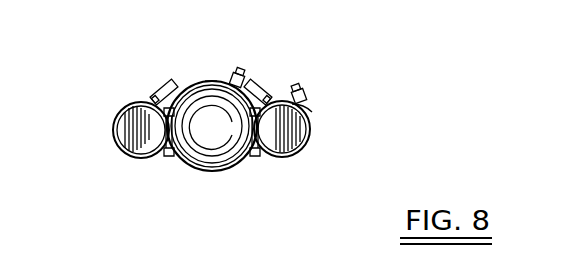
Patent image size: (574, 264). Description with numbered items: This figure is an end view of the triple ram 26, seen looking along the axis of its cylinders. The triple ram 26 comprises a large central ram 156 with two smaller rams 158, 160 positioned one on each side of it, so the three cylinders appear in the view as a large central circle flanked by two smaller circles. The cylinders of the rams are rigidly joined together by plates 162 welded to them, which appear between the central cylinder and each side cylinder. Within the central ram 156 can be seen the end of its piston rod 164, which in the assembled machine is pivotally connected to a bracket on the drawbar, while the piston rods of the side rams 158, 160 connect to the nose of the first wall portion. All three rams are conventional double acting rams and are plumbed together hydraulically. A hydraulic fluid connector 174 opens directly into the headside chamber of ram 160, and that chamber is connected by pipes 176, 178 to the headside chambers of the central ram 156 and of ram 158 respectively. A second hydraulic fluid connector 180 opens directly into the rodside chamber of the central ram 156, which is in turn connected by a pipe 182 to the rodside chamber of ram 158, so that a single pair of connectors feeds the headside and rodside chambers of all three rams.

The triple ram 26 is at (130, 169).
The central ram 156 is at (194, 171).
The ram 158 is at (116, 110).
The ram 160 is at (311, 140).
The plates 162 is at (168, 164).
The piston rod 164 is at (226, 136).
The hydraulic fluid connector 174 is at (308, 102).
The pipe 176 is at (304, 92).
The pipe 178 is at (211, 81).
The hydraulic fluid connector 180 is at (243, 79).
The pipe 182 is at (151, 92).